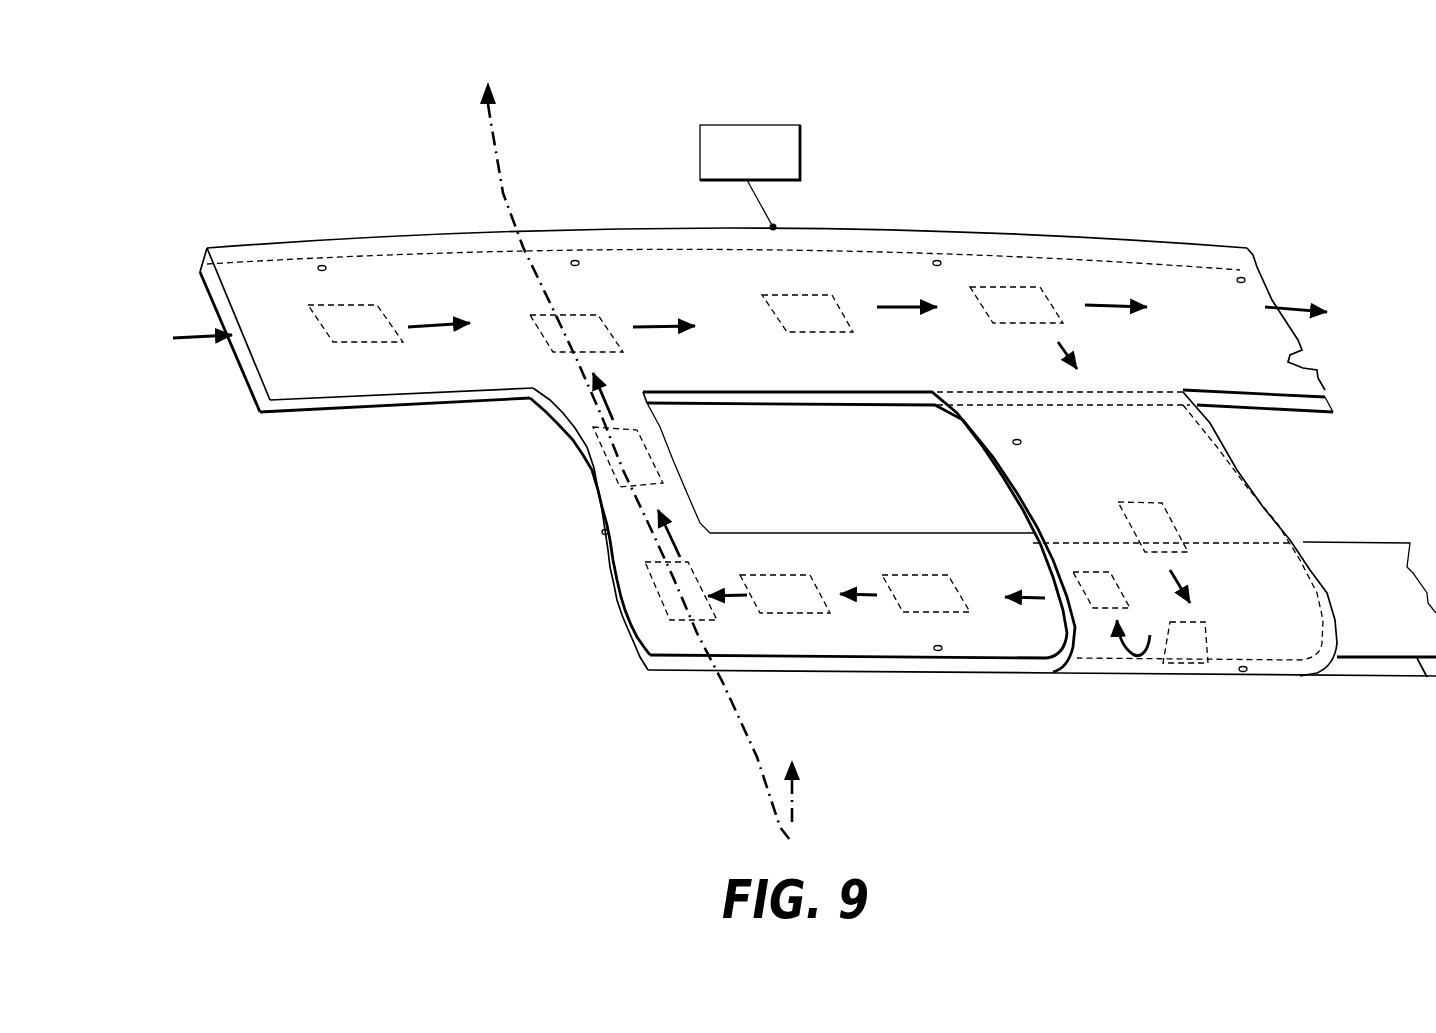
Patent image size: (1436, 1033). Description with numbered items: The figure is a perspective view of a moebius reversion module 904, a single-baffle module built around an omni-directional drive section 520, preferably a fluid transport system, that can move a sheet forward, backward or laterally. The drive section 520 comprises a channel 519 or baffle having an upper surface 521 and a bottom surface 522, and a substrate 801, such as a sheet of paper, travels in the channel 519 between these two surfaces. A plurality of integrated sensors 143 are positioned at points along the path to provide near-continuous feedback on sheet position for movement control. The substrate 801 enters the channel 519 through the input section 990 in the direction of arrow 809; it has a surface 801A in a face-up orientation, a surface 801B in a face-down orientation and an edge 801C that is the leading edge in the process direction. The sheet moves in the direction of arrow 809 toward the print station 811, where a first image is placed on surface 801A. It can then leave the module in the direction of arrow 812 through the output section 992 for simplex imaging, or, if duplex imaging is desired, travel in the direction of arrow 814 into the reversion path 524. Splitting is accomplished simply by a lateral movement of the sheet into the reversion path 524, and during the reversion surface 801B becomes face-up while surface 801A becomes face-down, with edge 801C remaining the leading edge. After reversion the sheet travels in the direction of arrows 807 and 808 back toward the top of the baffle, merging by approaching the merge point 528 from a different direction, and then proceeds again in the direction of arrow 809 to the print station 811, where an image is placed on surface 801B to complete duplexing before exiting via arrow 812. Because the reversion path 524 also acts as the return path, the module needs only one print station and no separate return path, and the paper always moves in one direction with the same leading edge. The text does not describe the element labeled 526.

The integrated sensor 143 is at (321, 266).
The channel 519 is at (283, 405).
The omni-directional drive section 520 is at (642, 247).
The upper surface 521 is at (242, 243).
The bottom surface 522 is at (292, 431).
The reversion path 524 is at (1227, 460).
The bottom edge 526 is at (838, 655).
The merge point 528 is at (530, 399).
The substrate 801 is at (390, 342).
The surface 801A is at (367, 305).
The surface 801B is at (357, 342).
The edge 801C is at (388, 313).
The arrow 807 is at (1032, 603).
The arrow 808 is at (607, 403).
The arrow 809 is at (447, 330).
The print station 811 is at (808, 176).
The arrow 812 is at (1123, 306).
The arrow 814 is at (1058, 354).
The moebius reversion module 904 is at (1219, 136).
The input section 990 is at (202, 338).
The output section 992 is at (1297, 313).